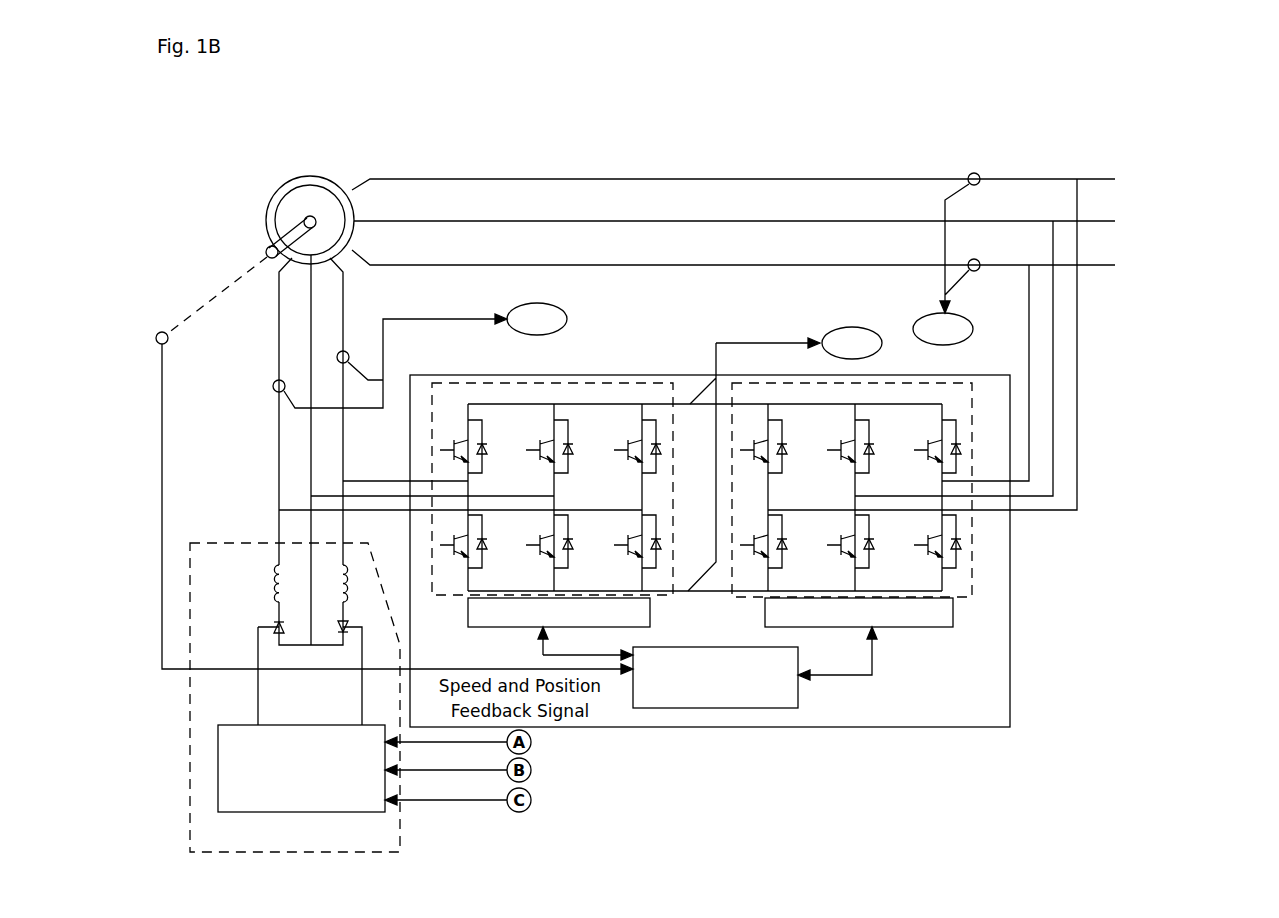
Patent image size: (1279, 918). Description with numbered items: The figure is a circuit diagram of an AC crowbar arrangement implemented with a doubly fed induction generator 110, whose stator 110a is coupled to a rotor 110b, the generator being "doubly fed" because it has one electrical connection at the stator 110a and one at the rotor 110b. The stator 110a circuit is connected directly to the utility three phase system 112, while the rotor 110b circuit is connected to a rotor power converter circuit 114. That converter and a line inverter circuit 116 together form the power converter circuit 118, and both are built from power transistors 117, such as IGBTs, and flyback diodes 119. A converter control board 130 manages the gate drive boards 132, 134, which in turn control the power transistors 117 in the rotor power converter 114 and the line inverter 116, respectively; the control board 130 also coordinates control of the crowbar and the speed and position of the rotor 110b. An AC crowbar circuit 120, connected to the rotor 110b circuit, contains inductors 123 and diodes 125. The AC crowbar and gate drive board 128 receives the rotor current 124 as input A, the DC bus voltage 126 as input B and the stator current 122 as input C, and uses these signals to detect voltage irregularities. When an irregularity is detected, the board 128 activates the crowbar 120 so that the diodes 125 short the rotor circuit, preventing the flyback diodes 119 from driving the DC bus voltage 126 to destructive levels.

The doubly fed induction generator 110 is at (252, 186).
The stator 110a is at (254, 207).
The rotor 110b is at (254, 234).
The utility three phase system 112 is at (800, 344).
The rotor power converter circuit 114 is at (548, 488).
The line inverter circuit 116 is at (862, 490).
The power transistors 117 is at (555, 463).
The power converter circuit 118 is at (710, 522).
The flyback diodes 119 is at (587, 443).
The AC crowbar circuit 120 is at (295, 697).
The stator current 122 is at (905, 259).
The inductors 123 is at (280, 583).
The rotor current 124 is at (420, 349).
The diodes 125 is at (283, 663).
The DC bus voltage 126 is at (774, 454).
The AC crowbar and gate drive board 128 is at (301, 768).
The converter control board 130 is at (715, 677).
The gate drive board 132 is at (543, 629).
The gate drive board 134 is at (880, 639).